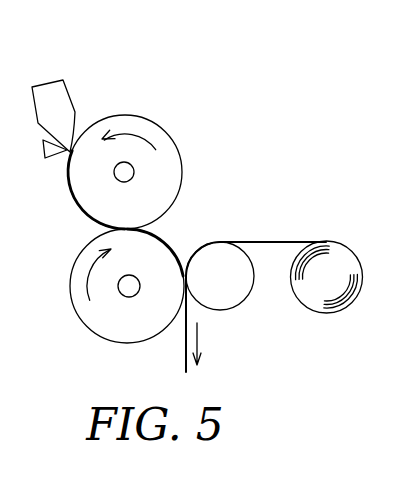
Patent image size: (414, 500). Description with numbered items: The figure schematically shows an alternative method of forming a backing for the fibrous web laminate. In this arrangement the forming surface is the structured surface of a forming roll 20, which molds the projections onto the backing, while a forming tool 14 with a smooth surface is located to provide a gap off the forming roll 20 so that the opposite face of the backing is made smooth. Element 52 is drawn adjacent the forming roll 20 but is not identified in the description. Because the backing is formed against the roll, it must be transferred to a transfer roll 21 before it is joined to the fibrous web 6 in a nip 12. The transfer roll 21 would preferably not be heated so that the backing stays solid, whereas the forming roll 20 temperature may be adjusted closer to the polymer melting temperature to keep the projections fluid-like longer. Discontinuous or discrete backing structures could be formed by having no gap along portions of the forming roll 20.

The fibrous web 6 is at (287, 241).
The nip 12 is at (185, 262).
The forming tool 14 is at (53, 162).
The forming roll 20 is at (163, 127).
The transfer roll 21 is at (95, 333).
The blade 52 is at (68, 83).